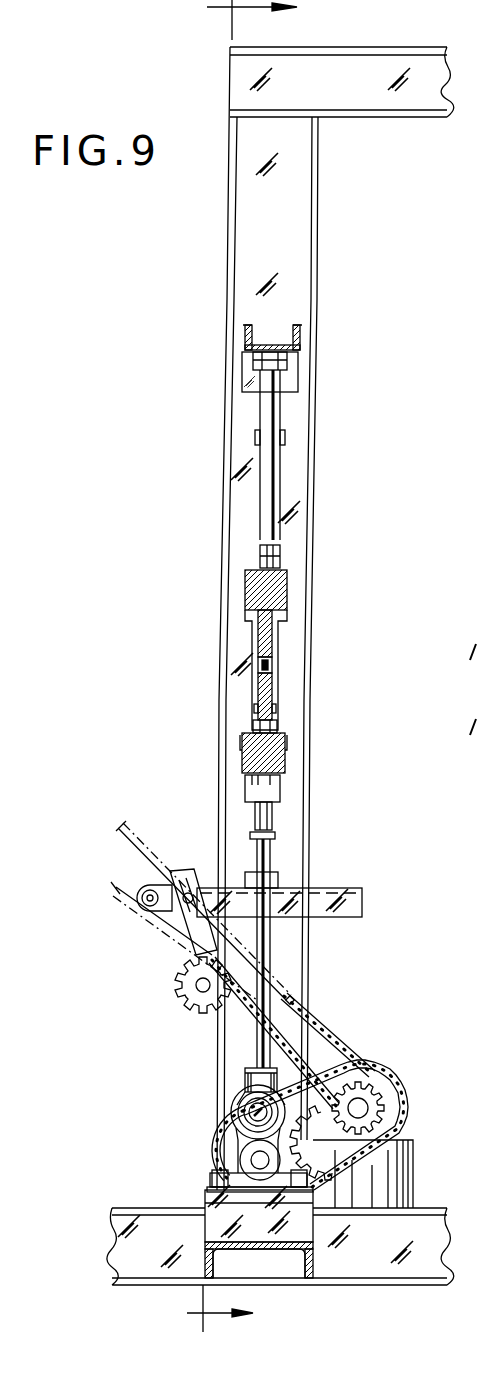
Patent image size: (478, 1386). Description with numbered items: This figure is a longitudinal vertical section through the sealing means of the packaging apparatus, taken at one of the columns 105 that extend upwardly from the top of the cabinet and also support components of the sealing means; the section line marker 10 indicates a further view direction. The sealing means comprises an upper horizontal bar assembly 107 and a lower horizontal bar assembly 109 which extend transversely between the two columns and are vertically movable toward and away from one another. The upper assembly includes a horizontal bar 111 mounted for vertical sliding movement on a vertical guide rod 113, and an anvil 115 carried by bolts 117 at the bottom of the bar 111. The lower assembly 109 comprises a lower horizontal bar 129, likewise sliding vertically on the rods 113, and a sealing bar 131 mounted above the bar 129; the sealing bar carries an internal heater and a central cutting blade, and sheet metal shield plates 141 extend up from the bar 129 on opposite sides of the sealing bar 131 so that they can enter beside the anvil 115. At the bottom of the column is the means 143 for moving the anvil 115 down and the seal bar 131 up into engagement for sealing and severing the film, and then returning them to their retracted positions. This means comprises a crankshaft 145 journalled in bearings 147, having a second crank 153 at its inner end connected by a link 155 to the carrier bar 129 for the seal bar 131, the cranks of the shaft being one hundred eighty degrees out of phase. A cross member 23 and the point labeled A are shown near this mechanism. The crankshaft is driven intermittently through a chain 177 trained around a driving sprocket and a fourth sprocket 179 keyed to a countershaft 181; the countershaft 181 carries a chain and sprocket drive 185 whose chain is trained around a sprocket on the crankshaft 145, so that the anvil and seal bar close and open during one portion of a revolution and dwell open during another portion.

The column 105 is at (228, 298).
The vertical guide rod 113 is at (275, 417).
The bolt 117 is at (265, 540).
The horizontal bar 111 is at (262, 589).
The upper horizontal bar assembly 107 is at (300, 593).
The anvil 115 is at (275, 642).
The sealing bar 131 is at (275, 685).
The sheet metal shield plate 141 is at (256, 708).
The lower horizontal bar 129 is at (247, 758).
The lower horizontal bar assembly 109 is at (298, 766).
The link 155 is at (268, 970).
The cross bracket 23 is at (287, 944).
The chain 177 is at (330, 1036).
The means for moving the anvil and seal bar 143 is at (202, 1093).
The second crank 153 is at (254, 1113).
The axis point A is at (214, 1143).
The crankshaft 145 is at (258, 1160).
The fourth sprocket 179 is at (388, 1124).
The countershaft 181 is at (366, 1108).
The chain and sprocket drive 185 is at (408, 1093).
The bearing 147 is at (215, 1227).
The section line 10 is at (209, 1314).